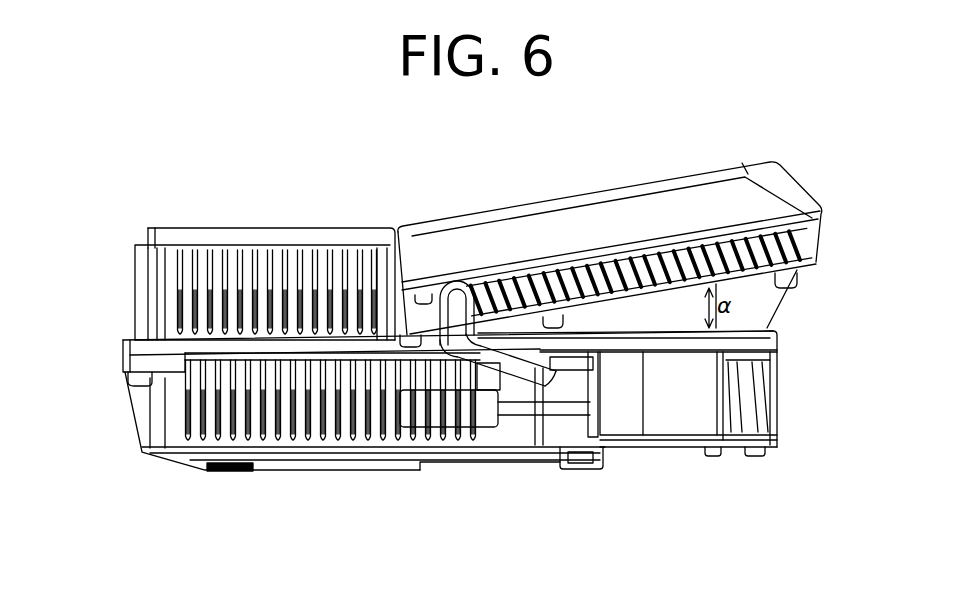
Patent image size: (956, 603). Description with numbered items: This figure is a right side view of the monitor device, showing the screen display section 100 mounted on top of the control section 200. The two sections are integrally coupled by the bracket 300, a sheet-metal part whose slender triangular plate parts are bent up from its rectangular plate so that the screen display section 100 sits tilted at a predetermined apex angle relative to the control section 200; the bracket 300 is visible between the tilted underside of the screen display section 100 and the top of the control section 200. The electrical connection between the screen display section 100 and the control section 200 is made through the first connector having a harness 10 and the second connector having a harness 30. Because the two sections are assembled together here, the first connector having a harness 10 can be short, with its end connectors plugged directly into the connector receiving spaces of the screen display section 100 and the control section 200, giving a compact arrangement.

The screen display section 100 is at (806, 178).
The control section 200 is at (113, 360).
The bracket 300 is at (760, 297).
The second connector having a harness 30 is at (517, 419).
The first connector having a harness 10 is at (569, 391).